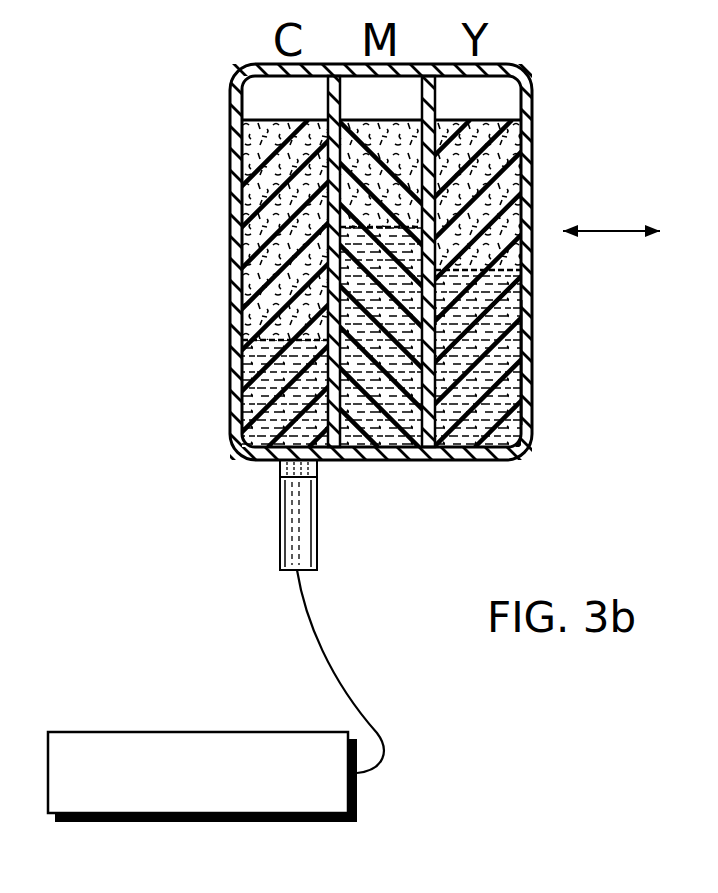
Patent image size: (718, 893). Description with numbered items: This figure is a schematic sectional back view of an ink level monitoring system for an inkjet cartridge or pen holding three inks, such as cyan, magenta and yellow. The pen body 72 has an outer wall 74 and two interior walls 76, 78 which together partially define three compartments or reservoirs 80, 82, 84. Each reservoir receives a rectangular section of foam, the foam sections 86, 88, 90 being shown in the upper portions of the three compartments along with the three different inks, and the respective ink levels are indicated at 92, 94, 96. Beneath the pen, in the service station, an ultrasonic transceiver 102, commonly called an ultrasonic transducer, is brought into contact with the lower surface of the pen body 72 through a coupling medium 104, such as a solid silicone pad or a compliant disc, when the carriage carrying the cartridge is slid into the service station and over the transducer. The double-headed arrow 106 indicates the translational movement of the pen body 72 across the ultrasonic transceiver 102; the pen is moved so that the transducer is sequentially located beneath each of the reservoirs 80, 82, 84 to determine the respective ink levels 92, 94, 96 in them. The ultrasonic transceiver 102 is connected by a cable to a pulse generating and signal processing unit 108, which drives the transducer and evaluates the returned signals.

The pen body 72 is at (593, 119).
The outer wall 74 is at (527, 322).
The interior wall 76 is at (527, 357).
The interior wall 78 is at (527, 403).
The reservoir 80 is at (280, 174).
The reservoir 82 is at (380, 183).
The reservoir 84 is at (505, 250).
The foam section 86 is at (283, 118).
The foam section 88 is at (380, 120).
The foam section 90 is at (481, 120).
The ink level 92 is at (287, 338).
The ink level 94 is at (500, 235).
The ink level 96 is at (527, 270).
The ultrasonic transceiver 102 is at (300, 535).
The coupling medium 104 is at (312, 468).
The arrow 106 is at (612, 228).
The pulse generating and signal processing unit 108 is at (182, 732).